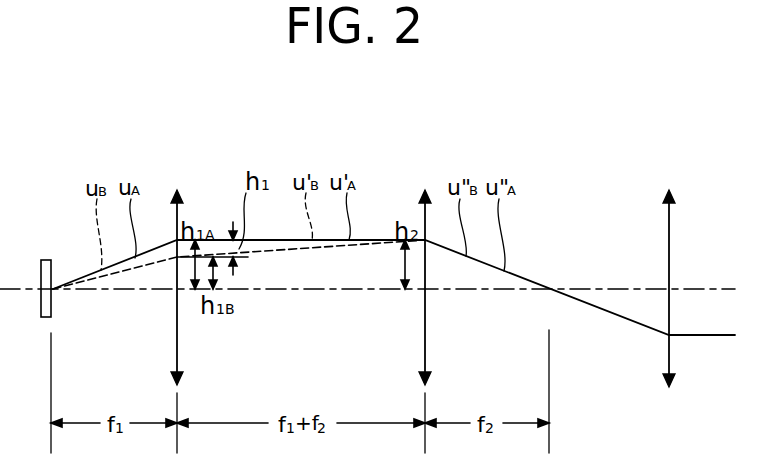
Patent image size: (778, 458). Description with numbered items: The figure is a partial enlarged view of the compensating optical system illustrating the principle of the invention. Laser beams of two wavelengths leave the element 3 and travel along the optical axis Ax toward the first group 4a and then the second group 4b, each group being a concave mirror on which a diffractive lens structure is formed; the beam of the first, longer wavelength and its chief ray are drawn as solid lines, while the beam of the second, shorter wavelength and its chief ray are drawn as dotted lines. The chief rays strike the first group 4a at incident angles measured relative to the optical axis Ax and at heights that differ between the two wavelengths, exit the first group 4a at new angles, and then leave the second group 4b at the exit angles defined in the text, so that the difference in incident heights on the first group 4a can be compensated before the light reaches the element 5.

The object (light source) 3 is at (46, 258).
The first group 4a is at (178, 188).
The second group 4b is at (426, 188).
The third lens / pupil plane 5 is at (675, 188).
The optical axis Ax is at (612, 289).